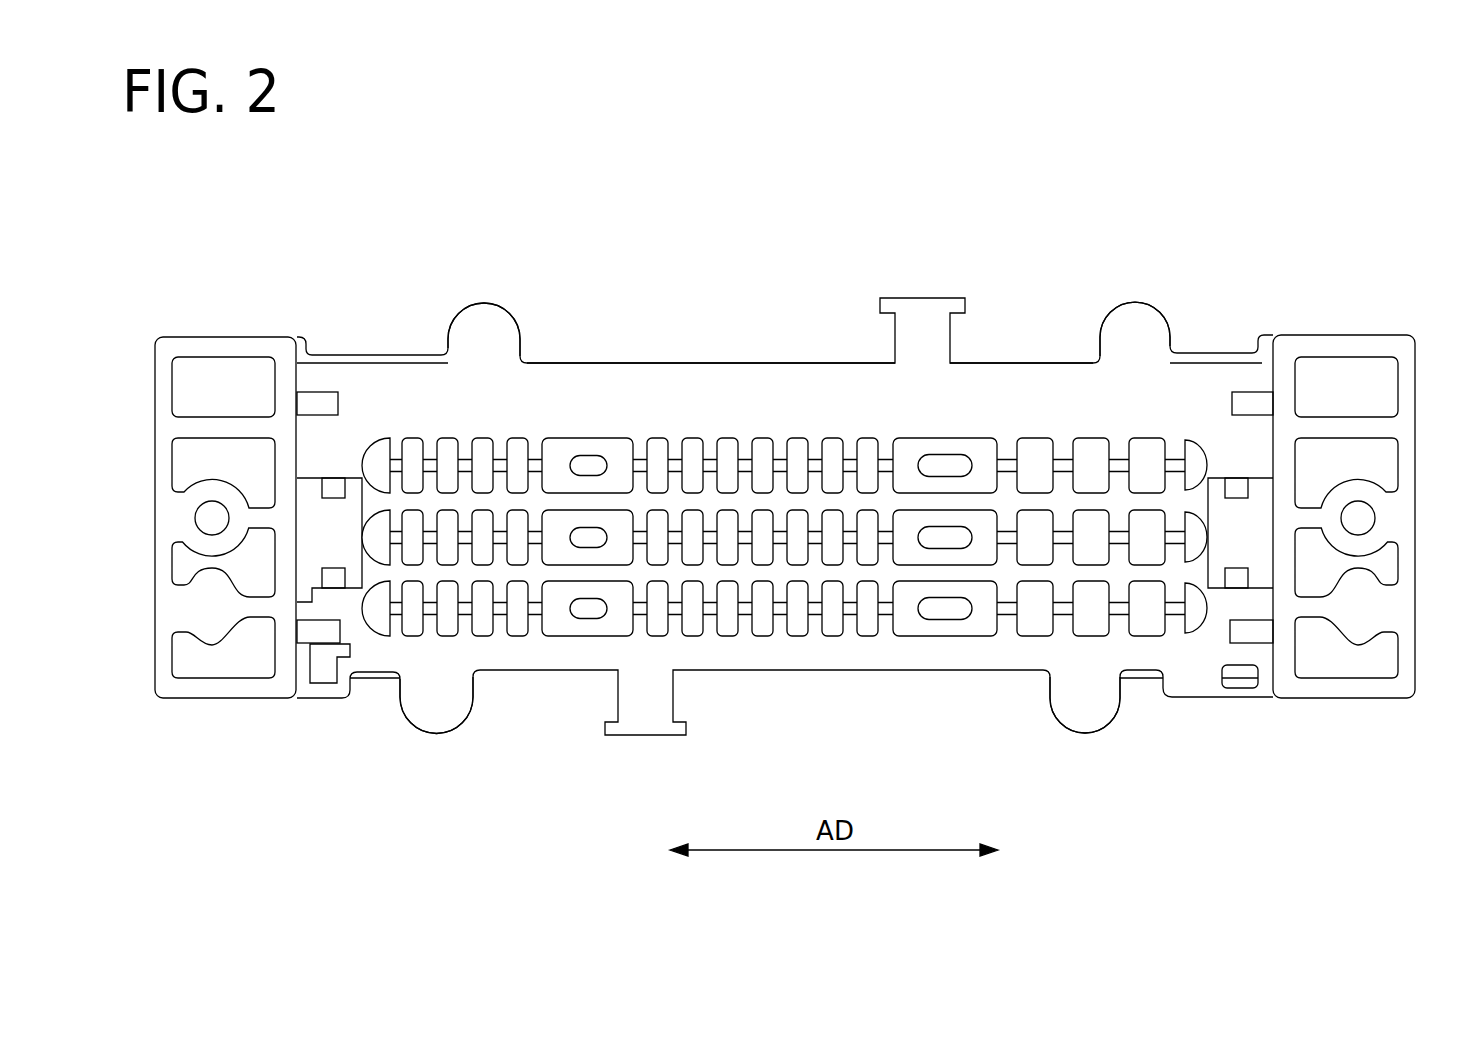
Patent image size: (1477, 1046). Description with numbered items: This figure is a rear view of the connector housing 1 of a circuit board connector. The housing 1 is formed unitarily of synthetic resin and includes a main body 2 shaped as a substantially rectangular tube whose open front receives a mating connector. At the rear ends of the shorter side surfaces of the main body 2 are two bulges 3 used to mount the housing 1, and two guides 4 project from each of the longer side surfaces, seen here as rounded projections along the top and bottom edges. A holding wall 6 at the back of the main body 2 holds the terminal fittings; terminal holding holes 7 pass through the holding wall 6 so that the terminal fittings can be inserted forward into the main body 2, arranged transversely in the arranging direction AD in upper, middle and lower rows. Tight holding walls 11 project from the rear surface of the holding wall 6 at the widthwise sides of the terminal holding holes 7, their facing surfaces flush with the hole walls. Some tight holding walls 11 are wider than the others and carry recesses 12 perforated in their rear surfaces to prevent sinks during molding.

The housing 1 is at (1320, 279).
The main body 2 is at (871, 652).
The bulge 3 is at (165, 509).
The guide 4 is at (487, 315).
The holding wall 6 is at (745, 398).
The terminal holding hole 7 is at (399, 462).
The tight holding wall 11 is at (448, 445).
The recess 12 is at (590, 610).